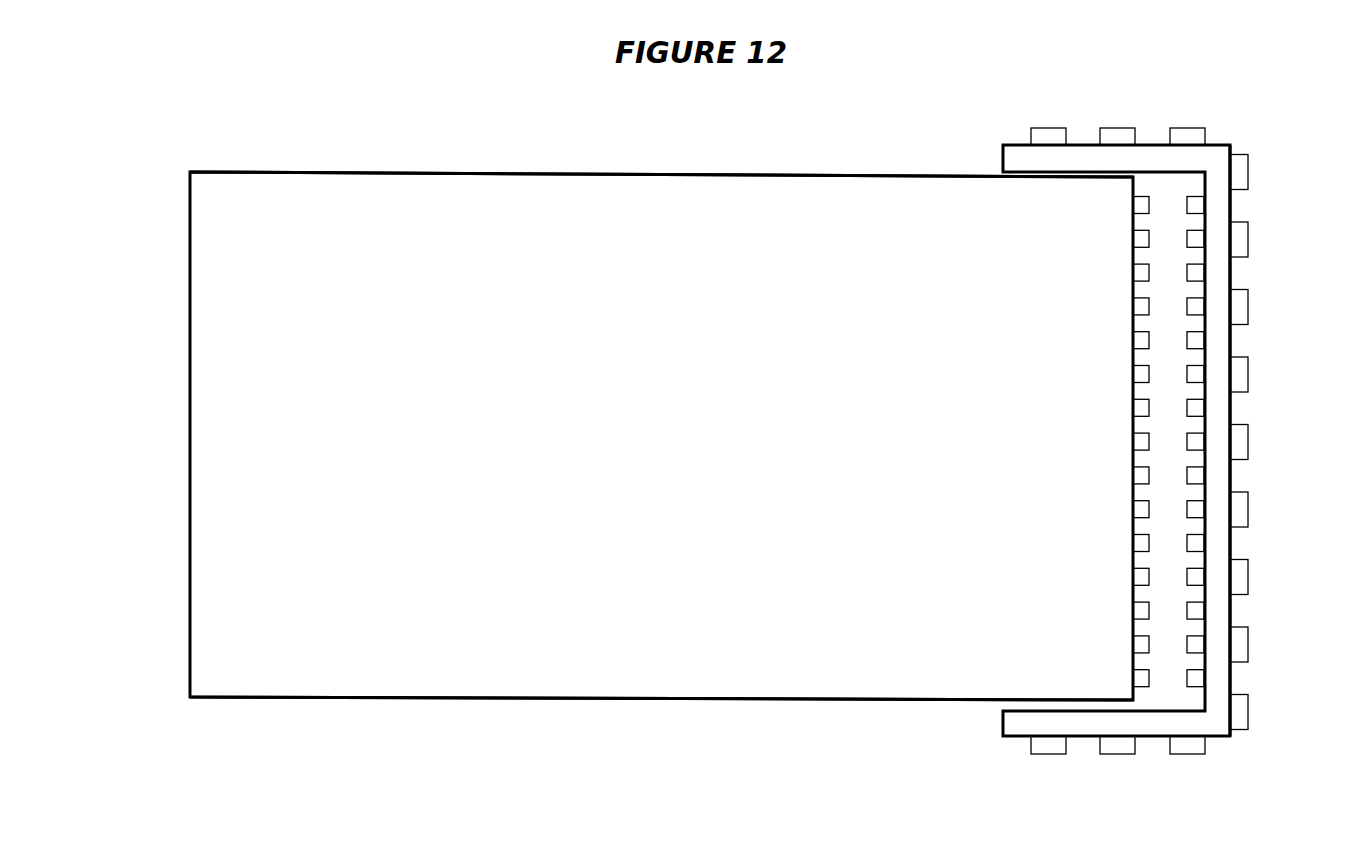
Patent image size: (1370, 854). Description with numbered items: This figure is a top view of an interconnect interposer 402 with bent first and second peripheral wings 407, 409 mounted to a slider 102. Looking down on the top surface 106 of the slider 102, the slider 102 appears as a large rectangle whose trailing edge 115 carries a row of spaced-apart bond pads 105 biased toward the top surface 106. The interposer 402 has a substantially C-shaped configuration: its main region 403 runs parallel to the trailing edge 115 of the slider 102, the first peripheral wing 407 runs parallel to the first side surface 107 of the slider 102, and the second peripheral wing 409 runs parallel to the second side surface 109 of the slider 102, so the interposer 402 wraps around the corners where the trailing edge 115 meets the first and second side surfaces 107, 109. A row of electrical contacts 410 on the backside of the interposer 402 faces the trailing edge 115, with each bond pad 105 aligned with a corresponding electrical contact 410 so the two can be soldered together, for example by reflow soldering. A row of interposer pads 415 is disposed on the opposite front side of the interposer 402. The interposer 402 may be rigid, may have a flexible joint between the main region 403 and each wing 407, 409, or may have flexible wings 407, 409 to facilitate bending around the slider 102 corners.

The slider 102 is at (432, 170).
The top surface 106 is at (655, 411).
The second side surface 109 is at (951, 178).
The first side surface 107 is at (952, 699).
The bond pads 105 is at (1132, 340).
The trailing edge 115 is at (1131, 560).
The electrical contacts 410 is at (1187, 370).
The interconnect interposer 402 is at (1232, 473).
The main region 403 is at (1232, 273).
The interposer pads 415 is at (1248, 373).
The second peripheral wing 409 is at (1152, 145).
The first peripheral wing 407 is at (1153, 737).